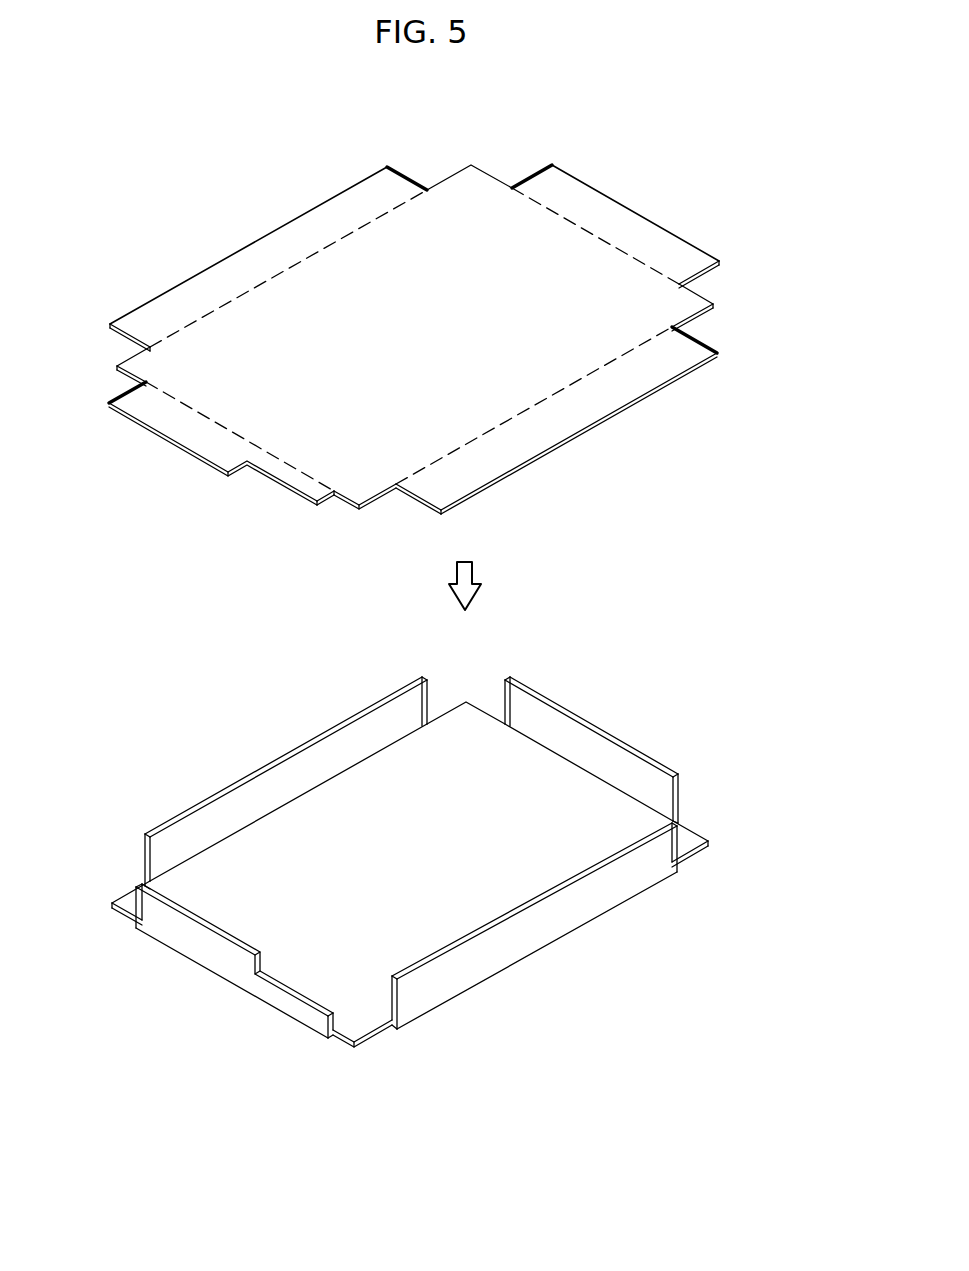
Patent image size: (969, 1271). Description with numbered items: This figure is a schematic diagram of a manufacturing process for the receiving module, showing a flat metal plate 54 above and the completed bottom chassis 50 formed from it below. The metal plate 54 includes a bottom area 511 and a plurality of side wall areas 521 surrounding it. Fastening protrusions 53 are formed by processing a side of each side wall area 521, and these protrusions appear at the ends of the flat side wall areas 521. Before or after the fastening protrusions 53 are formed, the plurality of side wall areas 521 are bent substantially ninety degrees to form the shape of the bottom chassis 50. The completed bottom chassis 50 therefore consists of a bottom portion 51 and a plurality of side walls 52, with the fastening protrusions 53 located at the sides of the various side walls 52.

The bottom chassis 50 is at (410, 876).
The bottom portion 51 is at (362, 1025).
The side wall 52 is at (572, 728).
The fastening protrusion 53 is at (121, 330).
The metal plate 54 is at (414, 315).
The bottom area 511 is at (595, 250).
The side wall area 521 is at (291, 237).